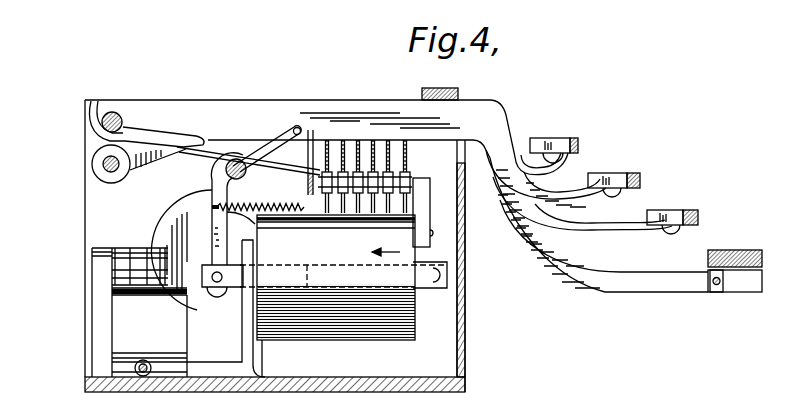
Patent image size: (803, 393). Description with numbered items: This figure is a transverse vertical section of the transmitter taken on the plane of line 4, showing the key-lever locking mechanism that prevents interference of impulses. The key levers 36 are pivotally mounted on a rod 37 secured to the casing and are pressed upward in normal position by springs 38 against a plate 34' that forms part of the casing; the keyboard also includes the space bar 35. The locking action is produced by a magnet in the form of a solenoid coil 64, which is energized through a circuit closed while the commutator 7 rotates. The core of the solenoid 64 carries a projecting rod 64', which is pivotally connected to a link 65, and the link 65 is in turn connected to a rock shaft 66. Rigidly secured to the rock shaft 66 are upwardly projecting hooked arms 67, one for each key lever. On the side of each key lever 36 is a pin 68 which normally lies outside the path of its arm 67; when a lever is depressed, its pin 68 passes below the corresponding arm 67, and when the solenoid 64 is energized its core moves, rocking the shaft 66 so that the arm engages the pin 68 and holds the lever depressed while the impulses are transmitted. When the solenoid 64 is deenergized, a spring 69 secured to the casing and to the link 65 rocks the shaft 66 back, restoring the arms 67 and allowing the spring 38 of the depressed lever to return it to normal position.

The frame post 4 is at (112, 268).
The commutator 7 is at (152, 260).
The plate 34' is at (469, 83).
The space bar 35 is at (733, 251).
The key levers 36 is at (340, 108).
The rod 37 is at (116, 108).
The springs 38 is at (128, 128).
The solenoid coil 64 is at (343, 259).
The projecting rod 64' is at (222, 236).
The link 65 is at (213, 207).
The rock shaft 66 is at (247, 174).
The hooked arms 67 is at (262, 158).
The pin 68 is at (297, 127).
The spring 69 is at (309, 188).